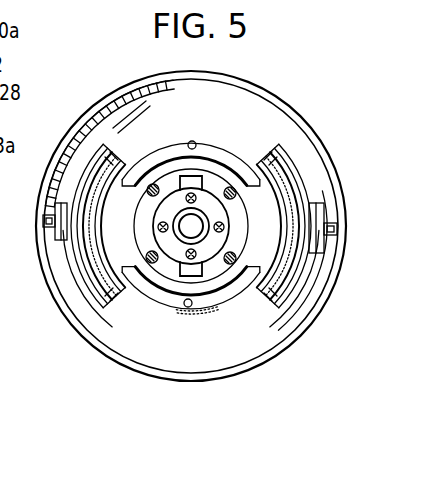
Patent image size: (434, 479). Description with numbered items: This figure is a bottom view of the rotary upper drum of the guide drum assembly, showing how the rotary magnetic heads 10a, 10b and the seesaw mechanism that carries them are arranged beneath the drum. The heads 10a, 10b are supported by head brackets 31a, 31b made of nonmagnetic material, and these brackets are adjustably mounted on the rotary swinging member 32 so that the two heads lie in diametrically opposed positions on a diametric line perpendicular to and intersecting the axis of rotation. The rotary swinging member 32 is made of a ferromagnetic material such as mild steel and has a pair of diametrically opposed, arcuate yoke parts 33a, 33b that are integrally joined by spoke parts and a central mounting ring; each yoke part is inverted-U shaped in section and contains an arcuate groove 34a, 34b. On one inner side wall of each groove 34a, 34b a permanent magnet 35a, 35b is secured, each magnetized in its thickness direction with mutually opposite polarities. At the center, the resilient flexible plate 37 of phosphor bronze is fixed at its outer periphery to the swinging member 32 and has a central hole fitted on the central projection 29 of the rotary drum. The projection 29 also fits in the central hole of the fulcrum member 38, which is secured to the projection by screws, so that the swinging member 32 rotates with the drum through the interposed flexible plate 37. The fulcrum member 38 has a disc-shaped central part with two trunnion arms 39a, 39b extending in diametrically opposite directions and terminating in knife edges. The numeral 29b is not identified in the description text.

The central projection 29 is at (169, 147).
The backing plate 29b is at (180, 238).
The rotary swinging member 32 is at (247, 183).
The permanent magnet 35a is at (267, 157).
The permanent magnet 35b is at (120, 152).
The yoke part 33a is at (283, 165).
The yoke part 33b is at (87, 288).
The arcuate groove 34a is at (267, 313).
The arcuate groove 34b is at (110, 310).
The head bracket 31a is at (319, 240).
The head bracket 31b is at (57, 207).
The rotary magnetic head 10a is at (337, 228).
The rotary magnetic head 10b is at (47, 222).
The flexible plate 37 is at (138, 229).
The fulcrum member 38 is at (210, 250).
The trunnion arm 39a is at (184, 300).
The trunnion arm 39b is at (196, 178).